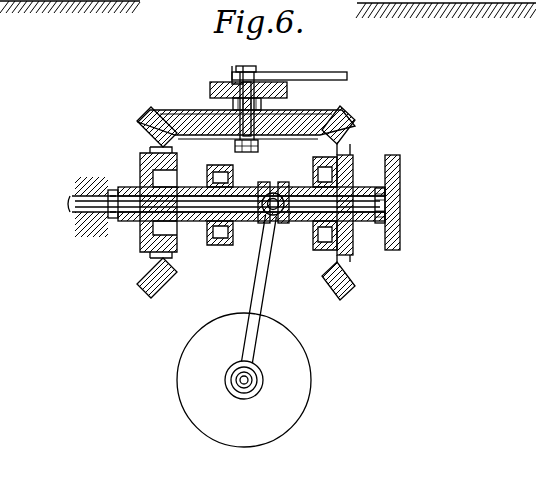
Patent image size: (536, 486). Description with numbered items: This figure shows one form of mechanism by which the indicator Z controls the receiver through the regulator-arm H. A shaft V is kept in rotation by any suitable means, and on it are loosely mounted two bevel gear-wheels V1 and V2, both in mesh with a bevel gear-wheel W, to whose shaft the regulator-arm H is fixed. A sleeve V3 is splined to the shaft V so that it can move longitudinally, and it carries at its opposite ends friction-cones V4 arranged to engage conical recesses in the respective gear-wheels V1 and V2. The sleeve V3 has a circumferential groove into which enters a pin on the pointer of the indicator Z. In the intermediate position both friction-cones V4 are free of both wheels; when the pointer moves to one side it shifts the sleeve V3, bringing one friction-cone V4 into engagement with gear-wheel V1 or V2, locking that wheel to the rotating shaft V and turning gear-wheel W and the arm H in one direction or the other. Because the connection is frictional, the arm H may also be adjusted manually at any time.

The regulator-arm H is at (304, 77).
The bevel gear-wheel W is at (303, 127).
The shaft V is at (395, 205).
The bevel gear-wheel V1 is at (342, 150).
The bevel gear-wheel V2 is at (147, 132).
The sleeve V3 is at (252, 220).
The friction-cones V4 is at (313, 237).
The indicator Z is at (266, 285).